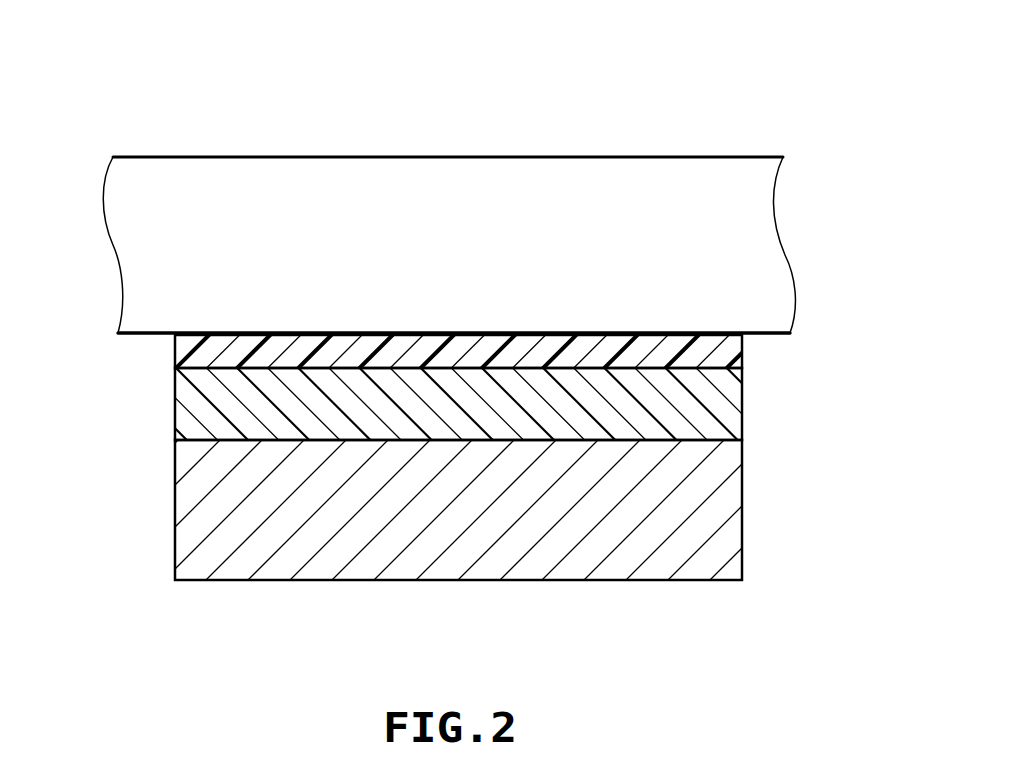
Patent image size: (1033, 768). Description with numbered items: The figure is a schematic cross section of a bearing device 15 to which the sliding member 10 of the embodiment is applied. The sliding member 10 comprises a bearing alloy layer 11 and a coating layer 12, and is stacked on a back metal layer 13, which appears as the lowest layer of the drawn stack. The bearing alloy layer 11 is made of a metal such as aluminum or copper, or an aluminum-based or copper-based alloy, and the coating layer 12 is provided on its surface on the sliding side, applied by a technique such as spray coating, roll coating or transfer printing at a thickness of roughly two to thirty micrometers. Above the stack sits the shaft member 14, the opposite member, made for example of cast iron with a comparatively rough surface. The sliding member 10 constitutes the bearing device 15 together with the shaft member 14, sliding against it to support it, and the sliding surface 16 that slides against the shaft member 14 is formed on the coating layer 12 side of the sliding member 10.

The sliding member 10 is at (461, 443).
The bearing alloy layer 11 is at (172, 417).
The coating layer 12 is at (172, 358).
The back metal layer 13 is at (172, 513).
The shaft member 14 is at (272, 157).
The bearing device 15 is at (408, 173).
The sliding surface 16 is at (260, 333).